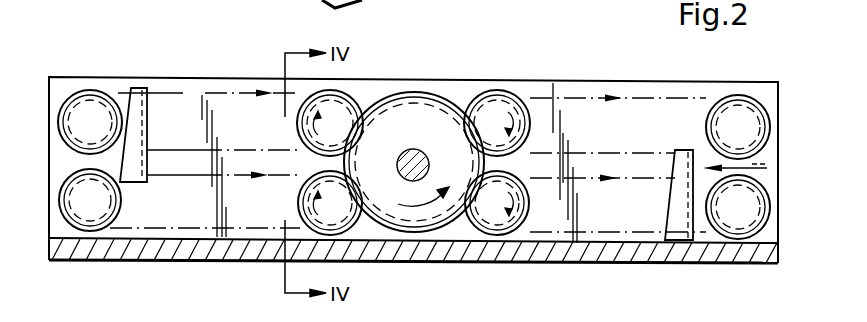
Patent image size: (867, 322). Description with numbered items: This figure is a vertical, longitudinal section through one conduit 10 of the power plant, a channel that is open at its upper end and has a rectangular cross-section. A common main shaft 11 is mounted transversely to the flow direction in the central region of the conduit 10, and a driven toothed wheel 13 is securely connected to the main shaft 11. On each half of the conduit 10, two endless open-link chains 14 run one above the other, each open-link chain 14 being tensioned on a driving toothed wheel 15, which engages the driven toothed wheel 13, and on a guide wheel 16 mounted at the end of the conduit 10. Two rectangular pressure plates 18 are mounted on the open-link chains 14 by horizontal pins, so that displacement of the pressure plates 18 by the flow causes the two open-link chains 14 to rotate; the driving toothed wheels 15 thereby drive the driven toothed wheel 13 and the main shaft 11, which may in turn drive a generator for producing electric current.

The conduit 10 is at (572, 106).
The main shaft 11 is at (397, 163).
The driven toothed wheel 13 is at (435, 107).
The open-link chain 14 is at (198, 177).
The driving toothed wheel 15 is at (340, 113).
The guide wheel 16 is at (93, 112).
The pressure plate 18 is at (155, 160).